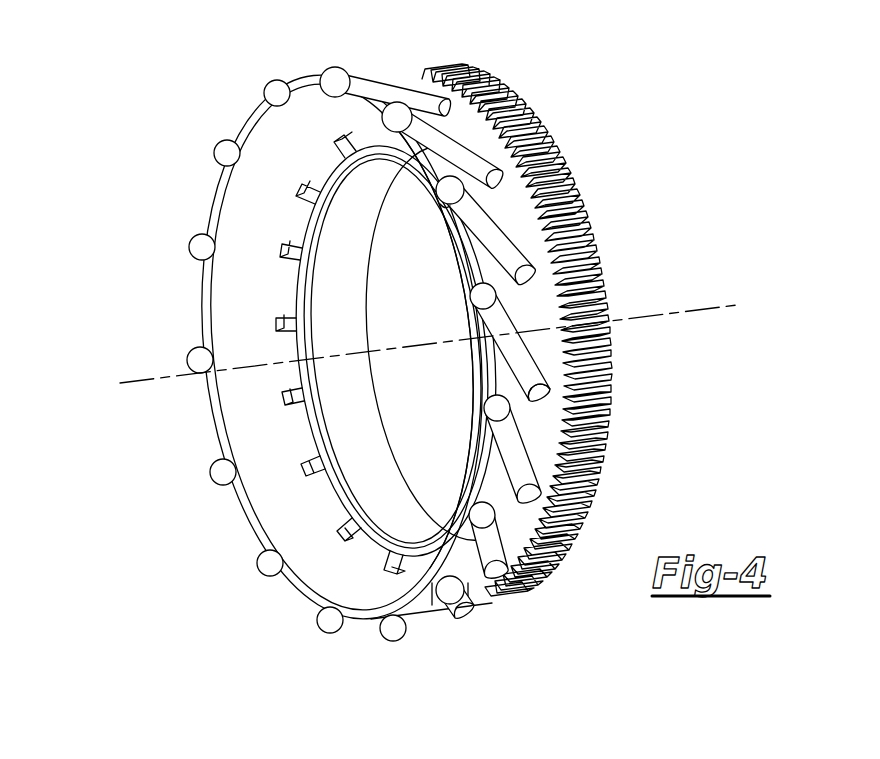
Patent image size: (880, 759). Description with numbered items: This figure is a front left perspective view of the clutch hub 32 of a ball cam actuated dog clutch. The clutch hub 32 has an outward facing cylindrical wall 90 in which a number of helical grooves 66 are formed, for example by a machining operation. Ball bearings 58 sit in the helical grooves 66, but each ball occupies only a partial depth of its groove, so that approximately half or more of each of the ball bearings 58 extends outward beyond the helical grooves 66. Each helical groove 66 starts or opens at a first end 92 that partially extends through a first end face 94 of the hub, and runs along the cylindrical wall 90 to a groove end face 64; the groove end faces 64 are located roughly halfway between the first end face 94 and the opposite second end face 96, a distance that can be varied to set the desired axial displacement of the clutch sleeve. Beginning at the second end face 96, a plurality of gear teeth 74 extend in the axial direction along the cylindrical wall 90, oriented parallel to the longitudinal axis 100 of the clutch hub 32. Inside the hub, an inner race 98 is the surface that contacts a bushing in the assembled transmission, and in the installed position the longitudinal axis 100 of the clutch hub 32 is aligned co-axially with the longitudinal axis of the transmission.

The clutch hub 32 is at (571, 330).
The ball bearings 58 is at (230, 148).
The groove end faces 64 is at (545, 397).
The helical grooves 66 is at (513, 263).
The gear teeth 74 is at (596, 313).
The outward facing cylindrical wall 90 is at (414, 84).
The first end 92 is at (446, 205).
The first end face 94 is at (466, 370).
The second end face 96 is at (612, 479).
The inner race 98 is at (352, 308).
The longitudinal axis 100 is at (145, 378).